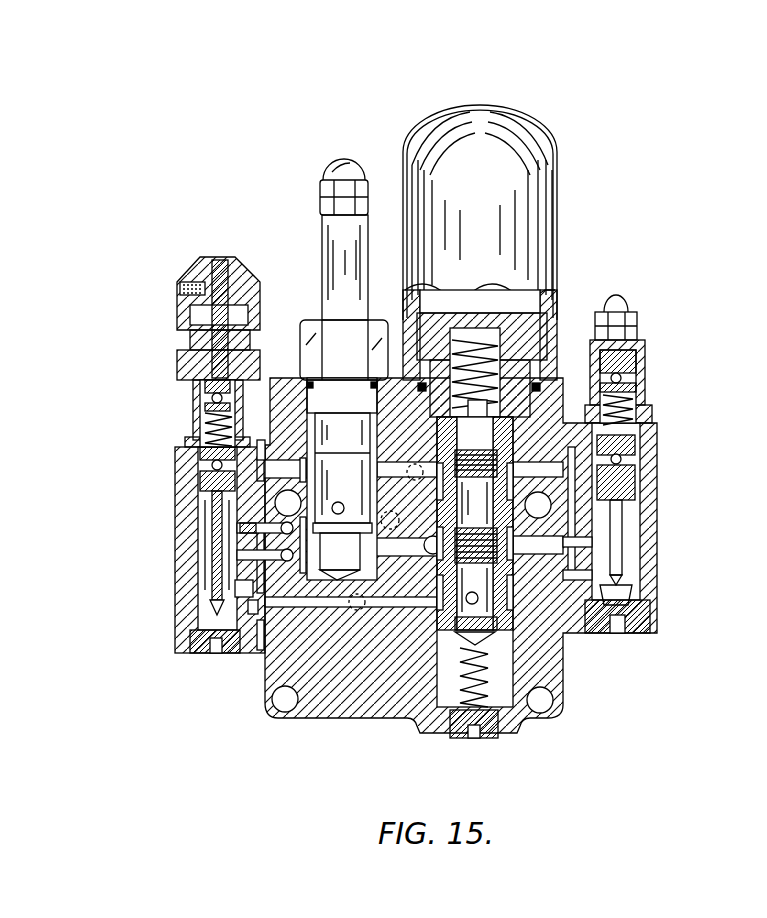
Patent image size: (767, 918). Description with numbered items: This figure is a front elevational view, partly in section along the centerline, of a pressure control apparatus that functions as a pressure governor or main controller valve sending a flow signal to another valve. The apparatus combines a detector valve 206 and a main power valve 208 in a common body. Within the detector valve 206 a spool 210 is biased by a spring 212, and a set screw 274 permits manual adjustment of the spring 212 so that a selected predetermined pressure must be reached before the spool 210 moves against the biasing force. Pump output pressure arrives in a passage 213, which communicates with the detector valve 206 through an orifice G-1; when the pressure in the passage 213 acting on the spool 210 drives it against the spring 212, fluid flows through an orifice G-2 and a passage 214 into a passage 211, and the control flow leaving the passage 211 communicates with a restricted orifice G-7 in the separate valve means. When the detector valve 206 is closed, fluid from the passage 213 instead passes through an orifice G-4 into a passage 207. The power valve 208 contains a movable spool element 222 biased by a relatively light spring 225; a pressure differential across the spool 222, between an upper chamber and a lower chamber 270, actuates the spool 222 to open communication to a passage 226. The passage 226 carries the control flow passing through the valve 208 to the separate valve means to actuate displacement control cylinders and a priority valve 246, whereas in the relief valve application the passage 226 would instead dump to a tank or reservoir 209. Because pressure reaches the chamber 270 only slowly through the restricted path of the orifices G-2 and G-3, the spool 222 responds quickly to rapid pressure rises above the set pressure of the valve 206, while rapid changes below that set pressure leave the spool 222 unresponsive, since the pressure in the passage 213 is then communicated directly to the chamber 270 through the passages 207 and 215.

The detector valve 206 is at (185, 398).
The passage 207 is at (255, 652).
The main power valve 208 is at (500, 50).
The tank or reservoir 209 is at (263, 453).
The spool 210 is at (205, 520).
The passage 211 is at (345, 458).
The spring 212 is at (188, 425).
The passage 213 is at (212, 620).
The passage 214 is at (212, 560).
The passage 215 is at (562, 400).
The movable spool element 222 is at (520, 457).
The spring 225 is at (470, 345).
The passage 226 is at (365, 548).
The priority valve 246 is at (650, 342).
The lower chamber 270 is at (512, 303).
The set screw 274 is at (178, 281).
The orifice G-1 is at (248, 652).
The orifice G-2 is at (356, 610).
The orifice G-3 is at (407, 600).
The orifice G-4 is at (222, 576).
The restricted orifice G-7 is at (410, 467).